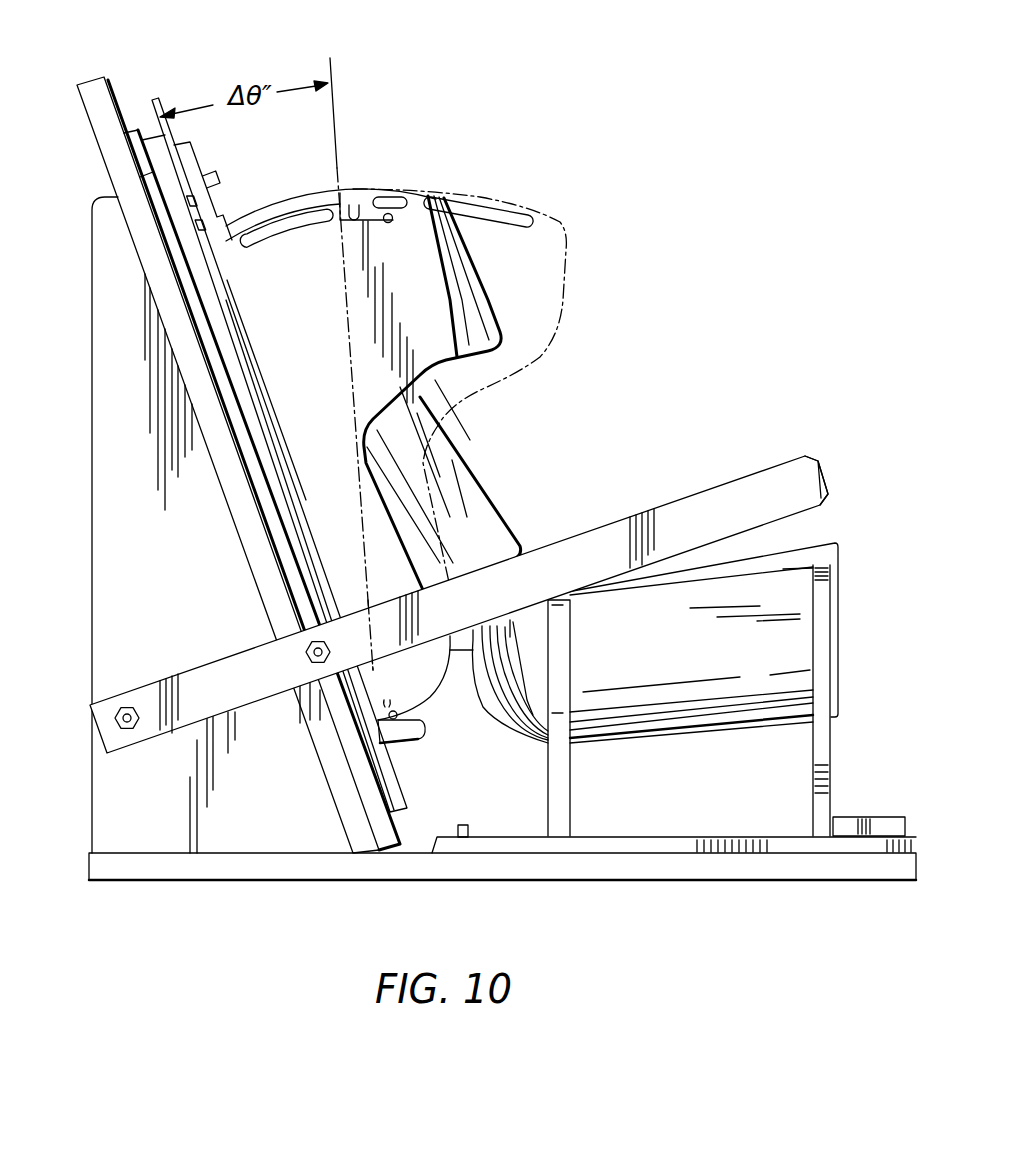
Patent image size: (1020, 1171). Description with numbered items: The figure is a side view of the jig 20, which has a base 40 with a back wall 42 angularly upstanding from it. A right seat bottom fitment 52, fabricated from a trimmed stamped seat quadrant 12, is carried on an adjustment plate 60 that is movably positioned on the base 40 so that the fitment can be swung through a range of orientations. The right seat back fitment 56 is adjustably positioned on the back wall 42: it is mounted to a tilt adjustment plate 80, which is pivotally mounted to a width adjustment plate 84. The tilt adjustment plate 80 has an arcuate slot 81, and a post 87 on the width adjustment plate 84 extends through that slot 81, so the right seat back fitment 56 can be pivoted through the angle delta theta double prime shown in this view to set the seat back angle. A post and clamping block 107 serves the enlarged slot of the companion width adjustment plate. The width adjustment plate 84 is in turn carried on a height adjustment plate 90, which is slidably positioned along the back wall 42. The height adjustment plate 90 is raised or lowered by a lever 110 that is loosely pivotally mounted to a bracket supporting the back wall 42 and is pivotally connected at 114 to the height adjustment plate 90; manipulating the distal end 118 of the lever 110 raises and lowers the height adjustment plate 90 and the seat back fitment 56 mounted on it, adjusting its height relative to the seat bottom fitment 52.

The stamped seat quadrant 12 is at (126, 706).
The jig 20 is at (615, 343).
The base 40 is at (262, 863).
The back wall 42 is at (320, 730).
The right seat bottom fitment 52 is at (510, 713).
The right seat back fitment 56 is at (477, 507).
The adjustment plate 60 is at (632, 843).
The tilt adjustment plate 80 is at (315, 307).
The arcuate slot 81 is at (358, 220).
The width adjustment plate 84 is at (155, 147).
The post 87 is at (390, 214).
The height adjustment plate 90 is at (130, 134).
The post and clamping block 107 is at (188, 158).
The lever 110 is at (587, 533).
The pivotal connection 114 is at (306, 653).
The distal end of lever 118 is at (762, 483).